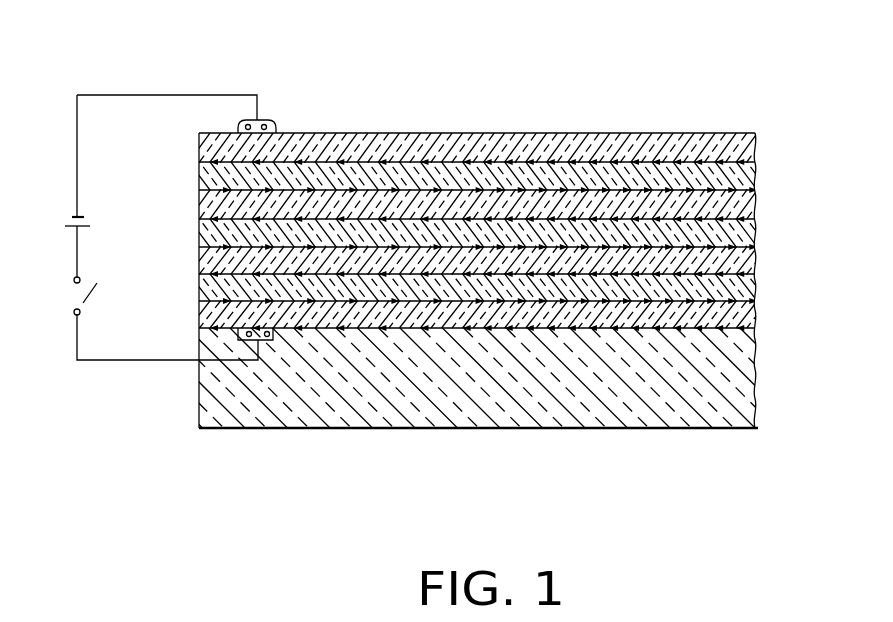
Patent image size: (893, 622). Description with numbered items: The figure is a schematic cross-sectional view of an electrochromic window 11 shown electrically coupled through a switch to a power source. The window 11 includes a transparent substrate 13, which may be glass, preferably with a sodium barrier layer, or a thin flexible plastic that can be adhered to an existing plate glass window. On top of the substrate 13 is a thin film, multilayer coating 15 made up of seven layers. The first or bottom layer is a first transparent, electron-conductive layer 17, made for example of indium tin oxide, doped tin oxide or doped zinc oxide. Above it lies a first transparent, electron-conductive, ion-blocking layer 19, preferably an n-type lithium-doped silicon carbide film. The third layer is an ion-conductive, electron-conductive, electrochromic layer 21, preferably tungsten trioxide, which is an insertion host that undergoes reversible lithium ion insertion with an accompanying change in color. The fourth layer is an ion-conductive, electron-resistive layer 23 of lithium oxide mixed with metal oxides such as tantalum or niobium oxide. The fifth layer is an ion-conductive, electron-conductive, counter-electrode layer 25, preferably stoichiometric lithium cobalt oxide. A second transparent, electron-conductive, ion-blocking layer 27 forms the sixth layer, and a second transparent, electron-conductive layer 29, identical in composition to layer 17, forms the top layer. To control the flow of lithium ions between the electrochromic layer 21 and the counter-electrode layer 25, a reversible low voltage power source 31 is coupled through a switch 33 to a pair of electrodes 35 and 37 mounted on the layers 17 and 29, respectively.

The electrochromic window 11 is at (537, 100).
The transparent substrate 13 is at (690, 428).
The thin film, multilayer coating 15 is at (192, 330).
The first transparent, electron-conductive layer 17 is at (758, 327).
The first transparent, electron-conductive, ion-blocking layer 19 is at (758, 297).
The electrochromic layer 21 is at (758, 268).
The ion-conductive, electron-resistive layer 23 is at (758, 238).
The counter-electrode layer 25 is at (760, 215).
The second transparent, electron-conductive, ion-blocking layer 27 is at (758, 185).
The second transparent, electron-conductive layer 29 is at (742, 137).
The power source 31 is at (76, 217).
The switch 33 is at (80, 300).
The electrode 35 is at (252, 342).
The electrode 37 is at (270, 123).